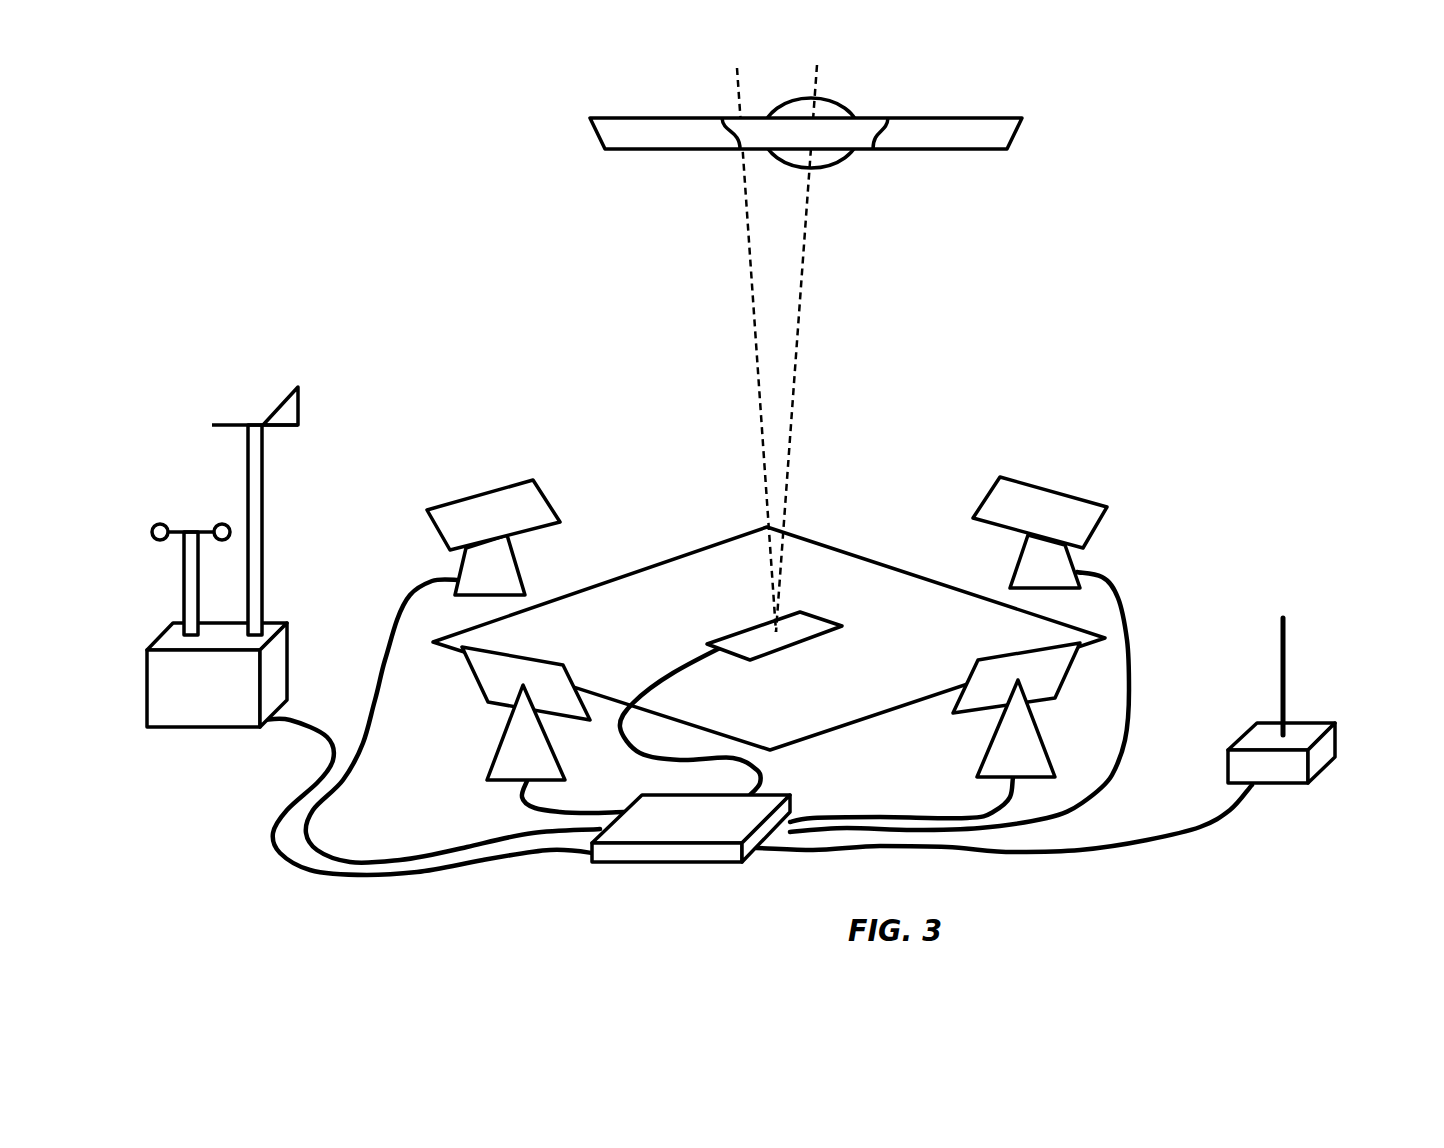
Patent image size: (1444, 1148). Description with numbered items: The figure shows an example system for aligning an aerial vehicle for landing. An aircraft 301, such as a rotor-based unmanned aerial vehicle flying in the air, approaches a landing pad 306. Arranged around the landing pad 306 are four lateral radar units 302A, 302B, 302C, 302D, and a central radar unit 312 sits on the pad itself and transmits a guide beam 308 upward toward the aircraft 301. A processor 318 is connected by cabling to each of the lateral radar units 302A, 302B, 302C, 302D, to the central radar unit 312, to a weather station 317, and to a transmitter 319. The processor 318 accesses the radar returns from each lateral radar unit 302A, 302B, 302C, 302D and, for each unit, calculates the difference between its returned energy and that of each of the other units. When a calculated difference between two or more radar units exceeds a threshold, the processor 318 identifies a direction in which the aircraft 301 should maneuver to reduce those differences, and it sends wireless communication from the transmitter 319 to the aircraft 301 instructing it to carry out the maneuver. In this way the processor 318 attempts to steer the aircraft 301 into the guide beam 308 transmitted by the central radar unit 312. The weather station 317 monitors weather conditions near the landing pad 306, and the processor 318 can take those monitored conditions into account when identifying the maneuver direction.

The aircraft 301 is at (1015, 130).
The lateral radar unit 302A is at (518, 757).
The lateral radar unit 302B is at (1008, 747).
The lateral radar unit 302C is at (478, 508).
The lateral radar unit 302D is at (1060, 500).
The landing pad 306 is at (682, 555).
The guide beam 308 is at (798, 311).
The central radar unit 312 is at (807, 623).
The weather station 317 is at (168, 503).
The processor 318 is at (677, 833).
The transmitter 319 is at (1310, 732).